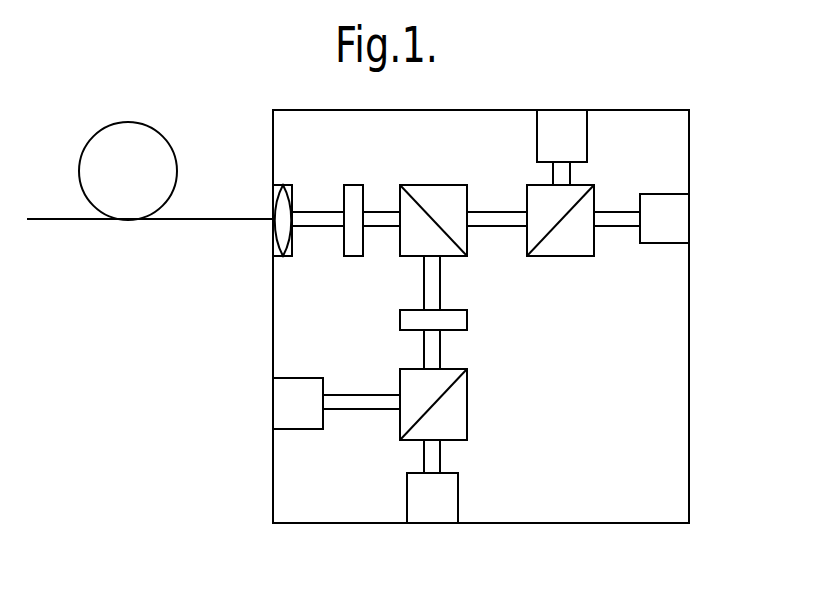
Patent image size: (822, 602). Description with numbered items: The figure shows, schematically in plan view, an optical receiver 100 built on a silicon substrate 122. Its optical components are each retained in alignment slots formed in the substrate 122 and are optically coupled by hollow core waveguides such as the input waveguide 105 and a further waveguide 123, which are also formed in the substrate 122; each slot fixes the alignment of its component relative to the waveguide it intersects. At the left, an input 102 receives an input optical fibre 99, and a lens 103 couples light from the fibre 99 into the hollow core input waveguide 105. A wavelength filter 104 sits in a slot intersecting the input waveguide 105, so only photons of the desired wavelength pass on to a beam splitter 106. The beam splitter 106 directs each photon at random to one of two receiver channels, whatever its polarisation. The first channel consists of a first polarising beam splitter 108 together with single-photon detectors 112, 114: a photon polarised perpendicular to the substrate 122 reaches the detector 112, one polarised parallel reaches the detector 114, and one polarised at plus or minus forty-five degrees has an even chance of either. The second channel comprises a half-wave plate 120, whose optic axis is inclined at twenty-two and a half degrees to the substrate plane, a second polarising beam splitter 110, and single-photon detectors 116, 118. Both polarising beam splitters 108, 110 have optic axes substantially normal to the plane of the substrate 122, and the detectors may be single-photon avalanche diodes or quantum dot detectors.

The input optical fibre 99 is at (53, 222).
The optical receiver 100 is at (640, 108).
The input 102 is at (272, 220).
The lens 103 is at (277, 207).
The wavelength filter 104 is at (353, 193).
The hollow core input waveguide 105 is at (380, 215).
The beam splitter 106 is at (436, 195).
The first polarising beam splitter 108 is at (569, 240).
The second polarising beam splitter 110 is at (453, 403).
The single-photon detector 112 is at (677, 218).
The single-photon detector 114 is at (562, 118).
The single-photon detector 116 is at (280, 405).
The single-photon detector 118 is at (432, 515).
The half-wave plate 120 is at (399, 320).
The silicon substrate 122 is at (668, 497).
The hollow core waveguide 123 is at (617, 213).